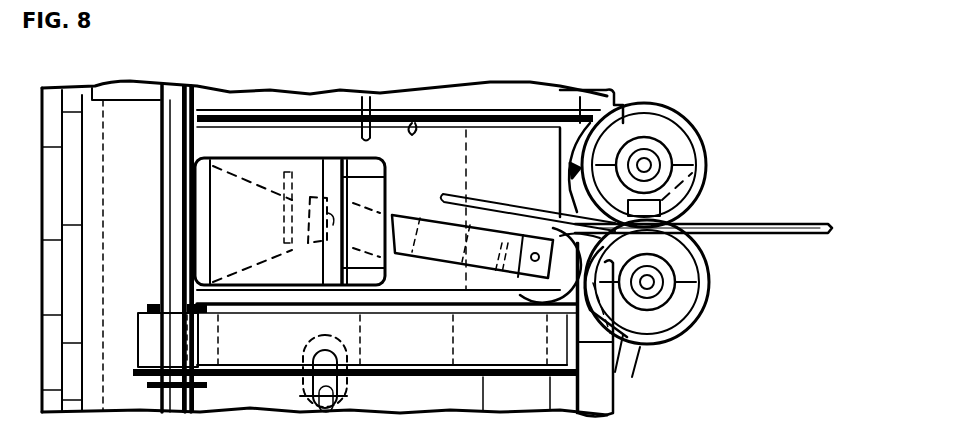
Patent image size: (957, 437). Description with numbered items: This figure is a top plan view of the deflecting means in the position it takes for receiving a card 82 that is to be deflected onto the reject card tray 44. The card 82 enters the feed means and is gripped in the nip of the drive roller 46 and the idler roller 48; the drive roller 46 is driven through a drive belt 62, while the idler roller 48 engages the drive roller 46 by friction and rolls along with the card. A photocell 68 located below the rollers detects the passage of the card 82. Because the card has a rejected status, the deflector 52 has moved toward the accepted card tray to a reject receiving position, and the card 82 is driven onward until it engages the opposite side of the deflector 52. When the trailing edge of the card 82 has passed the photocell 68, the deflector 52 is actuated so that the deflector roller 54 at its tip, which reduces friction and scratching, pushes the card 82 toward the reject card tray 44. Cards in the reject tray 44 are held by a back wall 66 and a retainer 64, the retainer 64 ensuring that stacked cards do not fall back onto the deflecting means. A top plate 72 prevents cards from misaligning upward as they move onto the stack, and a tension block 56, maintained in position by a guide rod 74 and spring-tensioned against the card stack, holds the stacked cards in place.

The reject card tray 44 is at (430, 125).
The drive roller 46 is at (690, 323).
The idler roller 48 is at (700, 140).
The deflector 52 is at (410, 215).
The deflector roller 54 is at (545, 218).
The tension block 56 is at (150, 340).
The drive belt 62 is at (625, 365).
The retainer 64 is at (600, 105).
The back wall 66 is at (416, 123).
The photocell 68 is at (700, 176).
The top plate 72 is at (274, 168).
The guide rod 74 is at (192, 86).
The card 82 is at (763, 228).